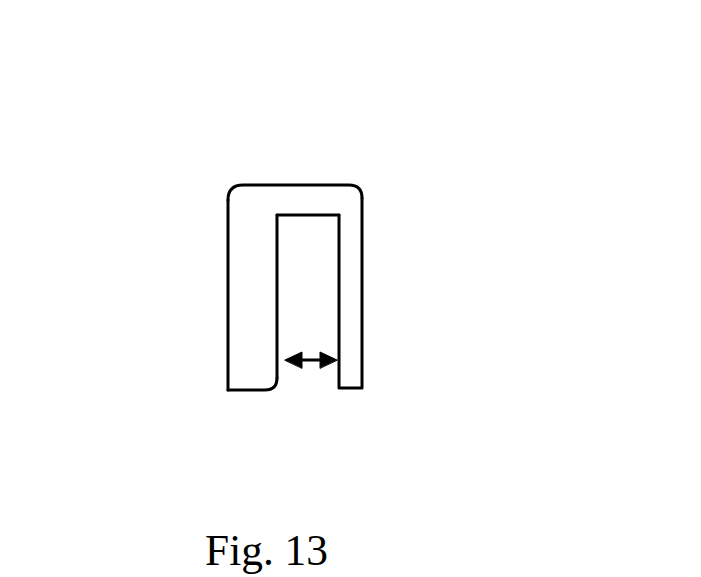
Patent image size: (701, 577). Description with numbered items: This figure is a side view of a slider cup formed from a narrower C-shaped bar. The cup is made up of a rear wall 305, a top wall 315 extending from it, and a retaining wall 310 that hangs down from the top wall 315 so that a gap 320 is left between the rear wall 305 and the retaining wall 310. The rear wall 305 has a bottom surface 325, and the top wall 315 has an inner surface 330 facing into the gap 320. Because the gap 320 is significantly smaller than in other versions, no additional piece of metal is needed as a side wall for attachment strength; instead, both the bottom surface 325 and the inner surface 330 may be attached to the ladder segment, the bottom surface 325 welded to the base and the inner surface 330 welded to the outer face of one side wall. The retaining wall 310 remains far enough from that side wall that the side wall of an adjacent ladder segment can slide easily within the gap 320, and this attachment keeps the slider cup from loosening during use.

The rear wall 305 is at (267, 297).
The retaining wall 310 is at (367, 323).
The top wall 315 is at (317, 185).
The gap 320 is at (317, 372).
The bottom surface 325 is at (267, 397).
The inner surface 330 is at (315, 217).